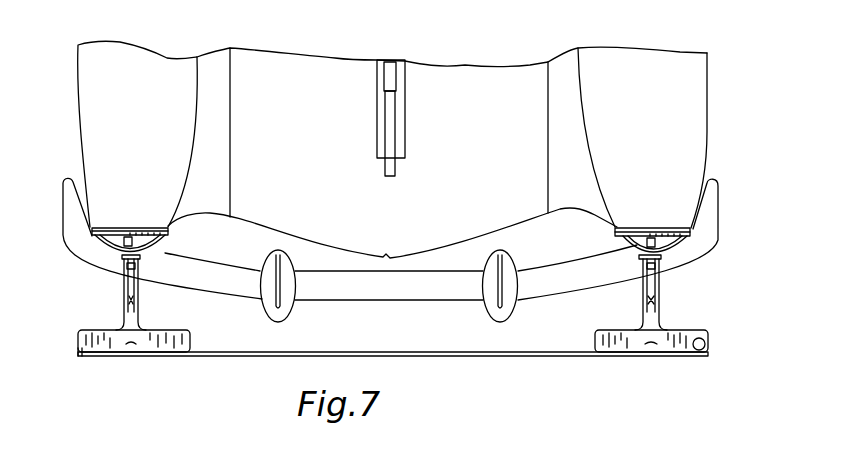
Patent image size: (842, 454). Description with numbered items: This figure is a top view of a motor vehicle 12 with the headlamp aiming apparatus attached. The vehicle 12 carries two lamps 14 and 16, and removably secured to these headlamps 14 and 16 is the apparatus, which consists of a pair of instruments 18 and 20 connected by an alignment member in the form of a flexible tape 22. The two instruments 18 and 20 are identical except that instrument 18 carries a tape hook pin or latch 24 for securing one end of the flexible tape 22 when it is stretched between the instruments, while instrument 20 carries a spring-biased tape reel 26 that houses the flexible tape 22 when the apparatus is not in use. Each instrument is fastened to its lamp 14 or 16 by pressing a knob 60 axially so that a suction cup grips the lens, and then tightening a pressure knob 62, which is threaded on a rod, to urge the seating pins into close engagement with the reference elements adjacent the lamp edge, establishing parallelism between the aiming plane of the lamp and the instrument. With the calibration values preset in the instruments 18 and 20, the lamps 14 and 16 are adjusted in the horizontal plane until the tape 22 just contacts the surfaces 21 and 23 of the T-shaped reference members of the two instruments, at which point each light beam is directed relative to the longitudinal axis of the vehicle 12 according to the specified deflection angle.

The motor vehicle 12 is at (158, 50).
The lamp 14 is at (93, 231).
The lamp 16 is at (654, 231).
The pressure knob 62 is at (147, 258).
The knob 60 is at (123, 270).
The instrument 18 is at (116, 307).
The instrument 20 is at (660, 316).
The surface 21 is at (180, 351).
The surface 23 is at (610, 352).
The flexible tape 22 is at (277, 355).
The tape hook pin 24 is at (78, 348).
The tape reel 26 is at (708, 338).